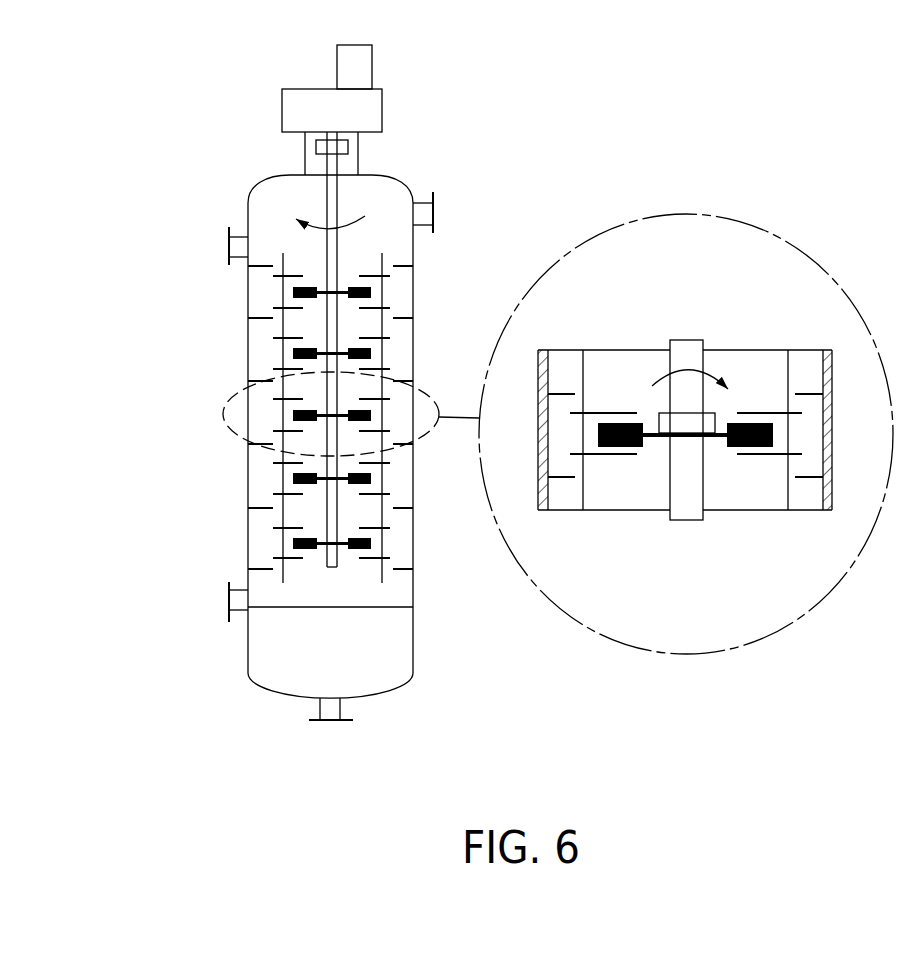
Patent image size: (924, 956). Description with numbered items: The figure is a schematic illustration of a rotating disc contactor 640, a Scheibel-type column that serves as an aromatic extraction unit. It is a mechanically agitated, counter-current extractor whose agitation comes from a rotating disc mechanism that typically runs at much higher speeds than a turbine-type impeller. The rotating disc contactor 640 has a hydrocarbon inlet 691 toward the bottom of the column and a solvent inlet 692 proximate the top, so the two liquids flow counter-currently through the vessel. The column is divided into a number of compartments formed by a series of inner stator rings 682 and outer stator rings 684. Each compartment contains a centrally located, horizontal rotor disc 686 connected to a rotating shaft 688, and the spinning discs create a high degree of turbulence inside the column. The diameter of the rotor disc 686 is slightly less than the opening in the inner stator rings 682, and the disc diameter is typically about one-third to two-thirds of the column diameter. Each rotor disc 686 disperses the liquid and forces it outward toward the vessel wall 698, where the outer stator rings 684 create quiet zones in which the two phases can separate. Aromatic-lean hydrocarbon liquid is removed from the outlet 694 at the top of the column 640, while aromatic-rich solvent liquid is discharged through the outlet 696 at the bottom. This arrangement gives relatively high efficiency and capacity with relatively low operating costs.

The rotating disc contactor 640 is at (113, 126).
The solvent inlet 692 is at (226, 246).
The hydrocarbon inlet 691 is at (224, 598).
The outlet 694 is at (567, 213).
The outlet 696 is at (331, 722).
The rotating shaft 688 is at (685, 333).
The outer stator rings 684 is at (566, 393).
The vessel wall 698 is at (823, 349).
The rotor disc 686 is at (600, 453).
The inner stator rings 682 is at (768, 463).